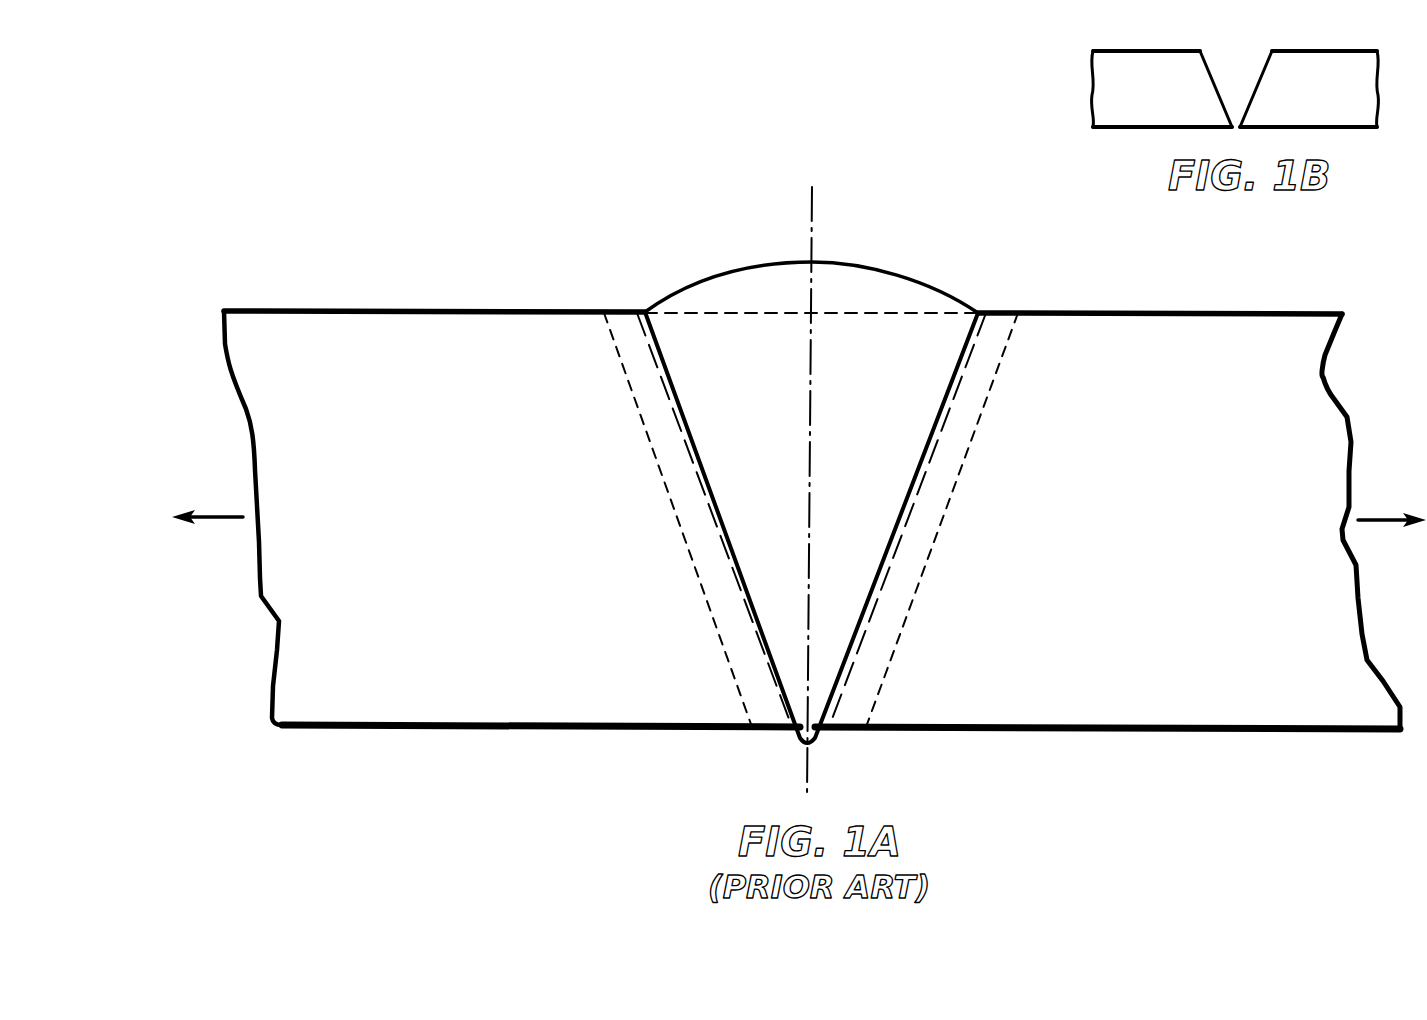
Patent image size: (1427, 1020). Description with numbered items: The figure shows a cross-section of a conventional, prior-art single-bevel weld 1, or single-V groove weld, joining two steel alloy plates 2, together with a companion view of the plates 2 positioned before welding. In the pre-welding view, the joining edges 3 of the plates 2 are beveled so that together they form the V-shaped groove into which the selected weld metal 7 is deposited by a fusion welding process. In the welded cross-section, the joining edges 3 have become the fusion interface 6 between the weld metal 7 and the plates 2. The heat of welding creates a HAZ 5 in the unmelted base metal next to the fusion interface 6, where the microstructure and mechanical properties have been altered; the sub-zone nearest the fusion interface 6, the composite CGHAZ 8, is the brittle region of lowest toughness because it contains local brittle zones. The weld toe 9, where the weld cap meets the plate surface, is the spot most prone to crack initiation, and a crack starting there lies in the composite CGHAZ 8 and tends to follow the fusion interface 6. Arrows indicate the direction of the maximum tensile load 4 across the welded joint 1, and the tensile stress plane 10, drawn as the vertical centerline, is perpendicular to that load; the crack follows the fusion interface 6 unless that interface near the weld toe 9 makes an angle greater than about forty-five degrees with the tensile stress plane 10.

In FIG. 1A, the single-bevel weld 1 is at (543, 203).
In FIG. 1A, the steel alloy plates 2 is at (1156, 327).
In FIG. 1B, the steel alloy plates 2 is at (1133, 60).
In FIG. 1B, the joining edges 3 is at (1275, 51).
In FIG. 1A, the maximum tensile load 4 is at (222, 522).
In FIG. 1A, the HAZ 5 is at (1016, 347).
In FIG. 1A, the fusion interface 6 is at (657, 348).
In FIG. 1A, the weld metal 7 is at (917, 327).
In FIG. 1A, the composite CGHAZ 8 is at (985, 331).
In FIG. 1A, the weld toe 9 is at (645, 312).
In FIG. 1A, the tensile stress plane 10 is at (812, 218).